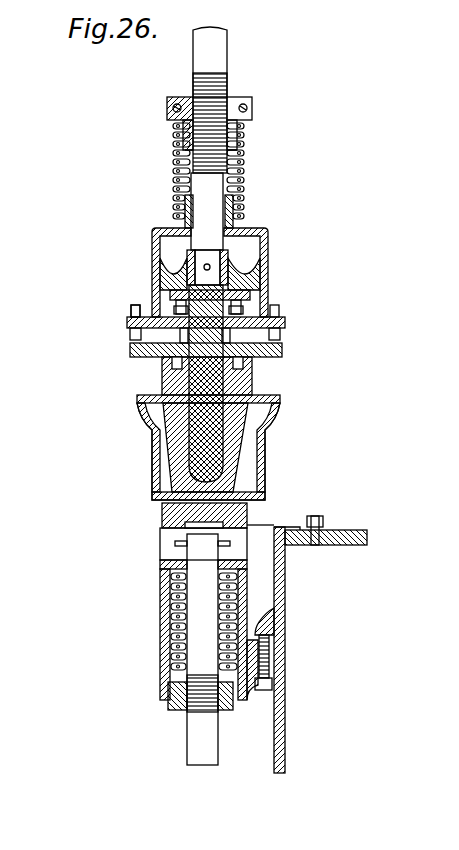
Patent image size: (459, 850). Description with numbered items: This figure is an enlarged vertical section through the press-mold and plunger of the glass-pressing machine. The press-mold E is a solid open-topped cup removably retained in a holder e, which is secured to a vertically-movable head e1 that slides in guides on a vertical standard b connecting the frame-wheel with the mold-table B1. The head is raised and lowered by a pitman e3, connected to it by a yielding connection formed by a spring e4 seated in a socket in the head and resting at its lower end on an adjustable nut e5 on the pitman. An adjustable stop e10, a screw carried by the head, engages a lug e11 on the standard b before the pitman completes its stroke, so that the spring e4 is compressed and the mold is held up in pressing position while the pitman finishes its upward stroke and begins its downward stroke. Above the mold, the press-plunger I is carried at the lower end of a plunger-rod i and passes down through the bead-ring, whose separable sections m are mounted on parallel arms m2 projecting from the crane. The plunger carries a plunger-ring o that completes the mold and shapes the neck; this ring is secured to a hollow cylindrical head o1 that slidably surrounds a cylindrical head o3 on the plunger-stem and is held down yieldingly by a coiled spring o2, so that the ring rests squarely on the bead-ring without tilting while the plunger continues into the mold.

The plunger-rod i is at (218, 51).
The coiled spring o2 is at (243, 175).
The hollow cylindrical head o1 is at (258, 266).
The cylindrical head o3 is at (255, 285).
The plunger-ring o is at (224, 338).
The bead-ring sections m is at (145, 334).
The parallel arms m2 is at (130, 350).
The press-mold E is at (165, 380).
The press-plunger I is at (210, 388).
The holder e is at (157, 449).
The head e1 is at (162, 567).
The pitman e3 is at (196, 744).
The spring e4 is at (170, 619).
The adjustable nut e5 is at (172, 707).
The standard b is at (277, 649).
The mold-table B1 is at (348, 545).
The lug e11 is at (262, 632).
The adjustable stop e10 is at (266, 673).